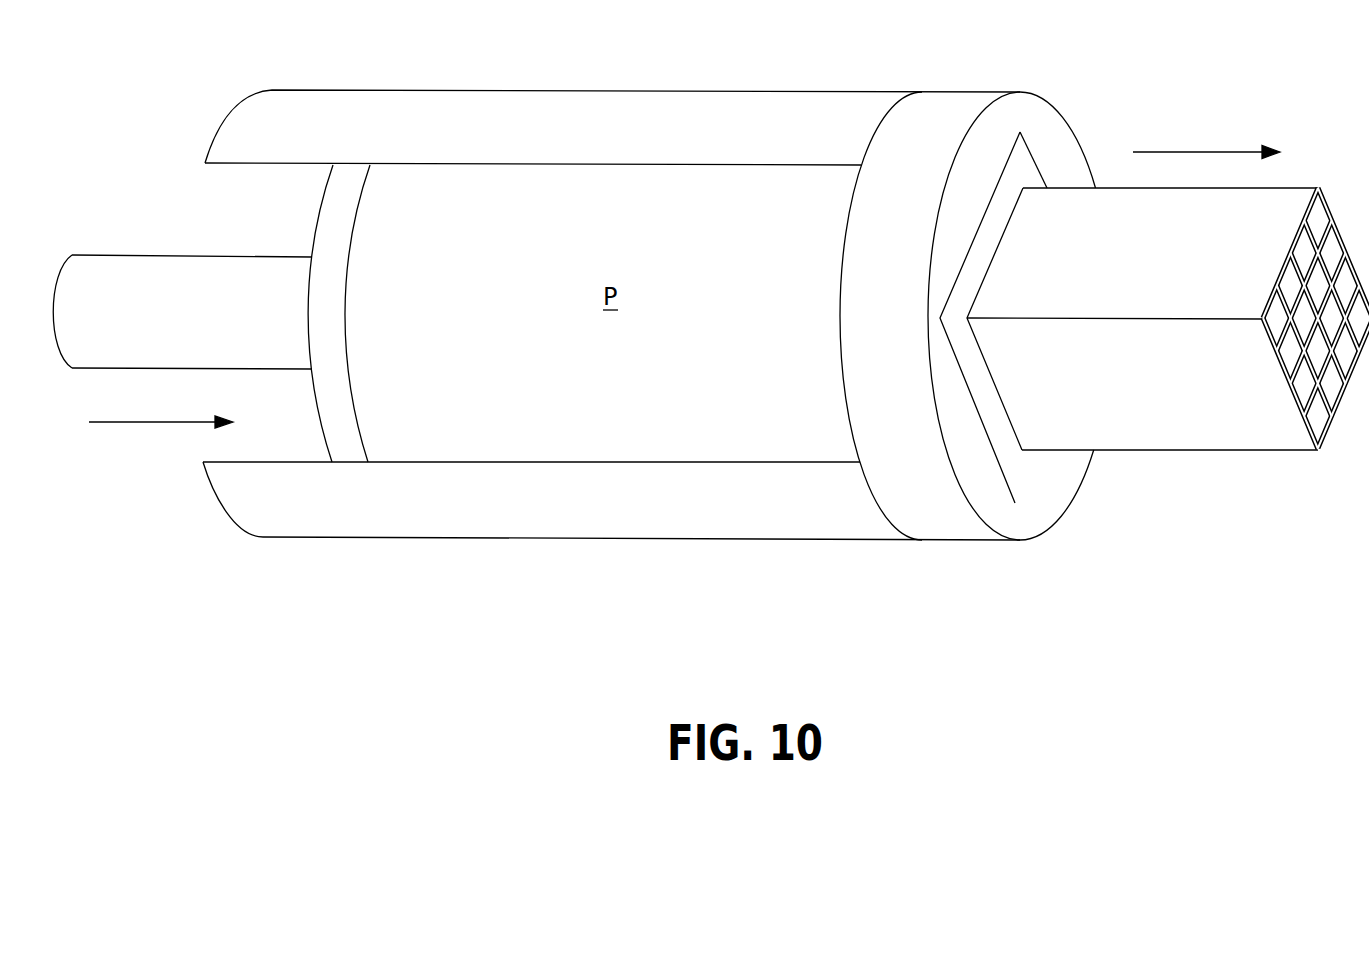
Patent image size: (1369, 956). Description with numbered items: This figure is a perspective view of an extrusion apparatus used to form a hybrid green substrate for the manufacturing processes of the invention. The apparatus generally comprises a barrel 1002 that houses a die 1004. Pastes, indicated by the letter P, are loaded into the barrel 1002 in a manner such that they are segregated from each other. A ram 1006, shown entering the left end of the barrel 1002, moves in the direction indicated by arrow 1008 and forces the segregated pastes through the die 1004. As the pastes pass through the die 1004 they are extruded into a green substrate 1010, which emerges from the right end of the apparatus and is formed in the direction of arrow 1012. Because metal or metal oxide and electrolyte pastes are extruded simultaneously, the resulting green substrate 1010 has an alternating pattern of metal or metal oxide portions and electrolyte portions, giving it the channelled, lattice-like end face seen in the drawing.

The barrel 1002 is at (662, 123).
The die 1004 is at (943, 527).
The ram 1006 is at (130, 232).
The arrow 1008 is at (147, 422).
The green substrate 1010 is at (1190, 475).
The arrow 1012 is at (1198, 152).